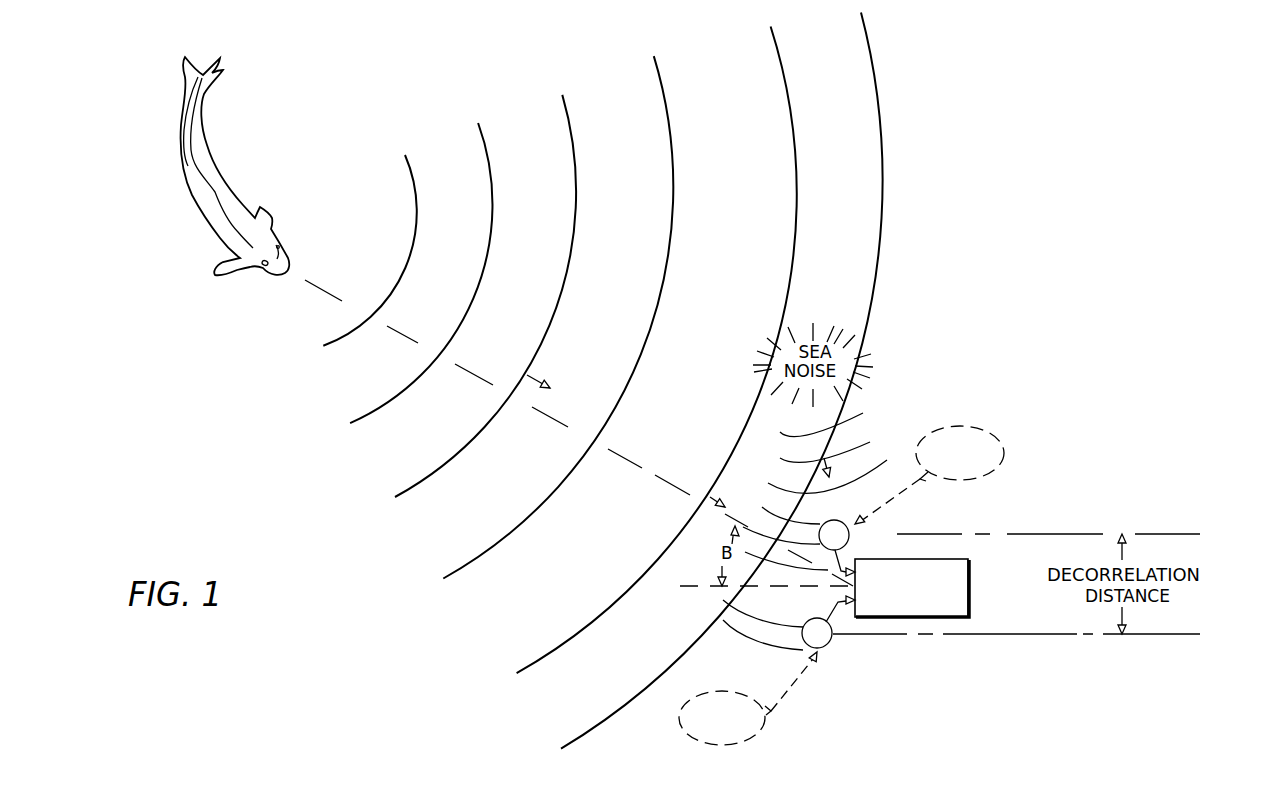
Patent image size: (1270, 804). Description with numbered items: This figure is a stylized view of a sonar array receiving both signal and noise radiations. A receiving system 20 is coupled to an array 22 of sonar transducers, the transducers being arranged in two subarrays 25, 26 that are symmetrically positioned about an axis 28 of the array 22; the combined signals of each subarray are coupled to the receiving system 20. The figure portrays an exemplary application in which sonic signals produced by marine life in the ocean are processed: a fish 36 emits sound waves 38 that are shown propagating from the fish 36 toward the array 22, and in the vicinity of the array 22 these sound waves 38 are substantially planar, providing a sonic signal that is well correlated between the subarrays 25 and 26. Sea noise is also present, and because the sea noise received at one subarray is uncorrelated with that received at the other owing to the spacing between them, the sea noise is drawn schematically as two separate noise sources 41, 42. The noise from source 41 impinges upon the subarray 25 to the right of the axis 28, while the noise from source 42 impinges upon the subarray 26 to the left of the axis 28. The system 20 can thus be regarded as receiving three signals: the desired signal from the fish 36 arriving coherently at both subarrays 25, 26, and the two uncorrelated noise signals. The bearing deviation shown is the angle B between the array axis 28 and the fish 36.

The receiving system 20 is at (955, 559).
The array 22 is at (824, 597).
The subarray 25 is at (849, 534).
The subarray 26 is at (830, 642).
The axis of the array 28 is at (718, 588).
The fish 36 is at (231, 196).
The sound waves 38 is at (477, 288).
The noise source 41 is at (1003, 447).
The noise source 42 is at (762, 728).